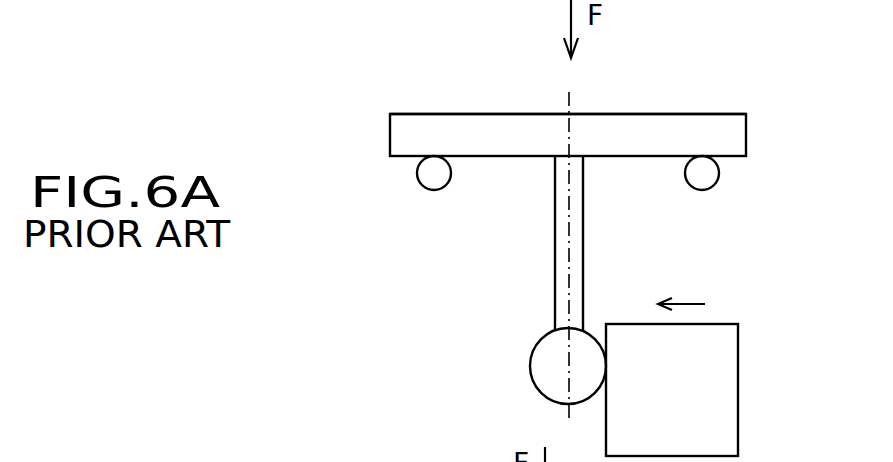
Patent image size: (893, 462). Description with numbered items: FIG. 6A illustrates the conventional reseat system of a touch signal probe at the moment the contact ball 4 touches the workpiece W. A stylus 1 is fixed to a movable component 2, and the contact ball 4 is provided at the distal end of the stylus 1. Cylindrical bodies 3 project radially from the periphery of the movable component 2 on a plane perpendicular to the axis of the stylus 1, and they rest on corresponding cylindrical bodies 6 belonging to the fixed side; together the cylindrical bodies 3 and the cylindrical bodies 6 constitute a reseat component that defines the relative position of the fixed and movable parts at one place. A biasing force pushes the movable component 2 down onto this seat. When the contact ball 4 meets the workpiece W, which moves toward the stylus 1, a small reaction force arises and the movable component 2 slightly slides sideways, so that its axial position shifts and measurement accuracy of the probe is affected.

The stylus 1 is at (558, 256).
The movable component 2 is at (584, 128).
The cylindrical bodies 3 is at (438, 127).
The contact ball 4 is at (553, 367).
The cylindrical bodies 6 is at (431, 170).
The workpiece W is at (713, 392).